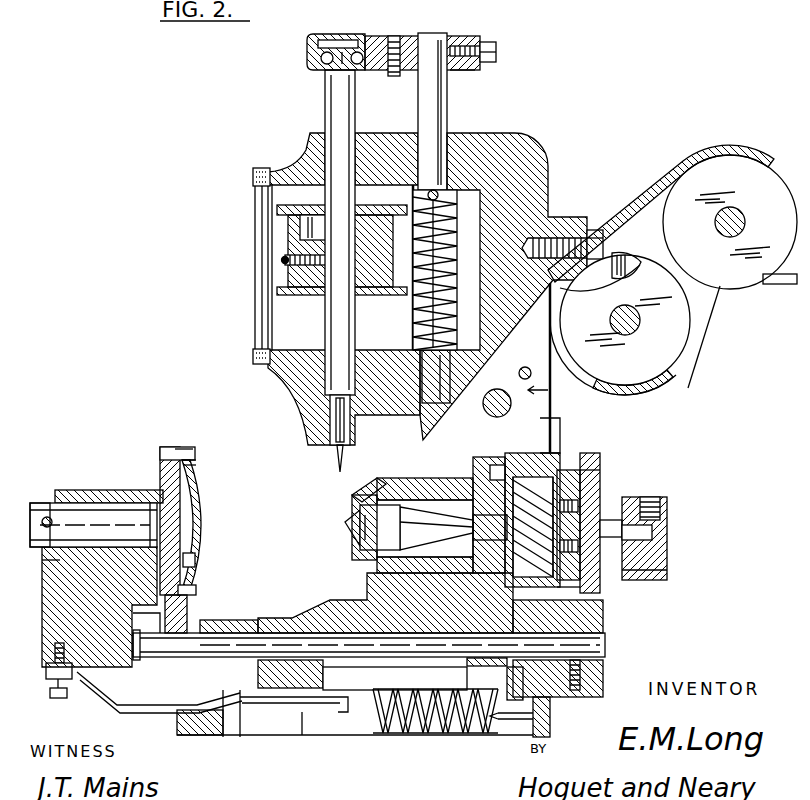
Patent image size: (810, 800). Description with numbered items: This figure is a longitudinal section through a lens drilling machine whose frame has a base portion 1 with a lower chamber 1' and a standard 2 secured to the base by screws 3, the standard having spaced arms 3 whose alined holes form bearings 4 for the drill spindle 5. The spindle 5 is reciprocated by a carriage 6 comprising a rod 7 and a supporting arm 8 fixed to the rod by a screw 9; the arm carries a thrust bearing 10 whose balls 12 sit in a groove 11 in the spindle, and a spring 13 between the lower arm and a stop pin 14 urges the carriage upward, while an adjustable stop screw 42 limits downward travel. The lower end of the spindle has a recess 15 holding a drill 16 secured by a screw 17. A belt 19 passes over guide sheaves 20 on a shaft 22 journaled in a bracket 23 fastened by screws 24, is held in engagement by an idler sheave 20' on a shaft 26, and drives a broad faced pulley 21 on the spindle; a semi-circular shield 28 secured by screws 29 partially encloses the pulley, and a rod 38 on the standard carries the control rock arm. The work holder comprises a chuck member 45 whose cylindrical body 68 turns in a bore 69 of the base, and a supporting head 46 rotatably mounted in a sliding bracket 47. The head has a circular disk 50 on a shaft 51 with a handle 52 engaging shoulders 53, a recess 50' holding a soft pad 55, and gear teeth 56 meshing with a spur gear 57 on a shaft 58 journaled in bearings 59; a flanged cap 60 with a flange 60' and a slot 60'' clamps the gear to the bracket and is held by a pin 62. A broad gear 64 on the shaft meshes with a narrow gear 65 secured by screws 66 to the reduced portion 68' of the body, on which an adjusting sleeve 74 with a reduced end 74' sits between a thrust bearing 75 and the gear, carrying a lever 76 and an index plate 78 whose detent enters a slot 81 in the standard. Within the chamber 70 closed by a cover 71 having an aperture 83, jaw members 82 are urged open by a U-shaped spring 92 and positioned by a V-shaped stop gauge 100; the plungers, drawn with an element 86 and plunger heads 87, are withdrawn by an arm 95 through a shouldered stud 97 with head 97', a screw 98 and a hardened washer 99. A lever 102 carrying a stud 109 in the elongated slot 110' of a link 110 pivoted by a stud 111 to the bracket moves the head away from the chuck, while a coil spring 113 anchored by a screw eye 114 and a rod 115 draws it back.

The base portion 1 is at (226, 739).
The chamber 1' is at (300, 743).
The standard 2 is at (522, 158).
The arms 3 is at (300, 152).
The bearings 4 is at (314, 140).
The drill spindle 5 is at (335, 318).
The carriage 6 is at (450, 85).
The rod 7 is at (440, 113).
The supporting arm 8 is at (420, 33).
The screw 9 is at (497, 50).
The thrust bearing 10 is at (307, 48).
The groove 11 is at (330, 70).
The balls 12 is at (320, 64).
The spring 13 is at (450, 232).
The stop pin 14 is at (445, 195).
The recess 15 is at (328, 426).
The drill 16 is at (336, 463).
The screw 17 is at (338, 452).
The belt 19 is at (775, 285).
The guide sheaves 20 is at (620, 308).
The idler sheave 20' is at (730, 201).
The pulley 21 is at (300, 232).
The shaft 22 is at (630, 322).
The supporting bracket 23 is at (646, 188).
The screws 24 is at (556, 218).
The shaft 26 is at (742, 220).
The shield 28 is at (280, 258).
The screws 29 is at (253, 172).
The rod 38 is at (520, 370).
The screw 42 is at (393, 36).
The chuck member 45 is at (377, 565).
The supporting head member 46 is at (127, 520).
The bracket 47 is at (55, 588).
The circular disk 50 is at (197, 521).
The circular recess 50' is at (211, 454).
The shaft 51 is at (95, 500).
The handle 52 is at (45, 503).
The shoulders 53 is at (42, 563).
The pad 55 is at (196, 520).
The gear teeth 56 is at (192, 456).
The spur gear 57 is at (197, 606).
The shaft 58 is at (200, 626).
The bearings 59 is at (308, 620).
The flanged cap member 60 is at (162, 435).
The flange 60' is at (181, 427).
The slot 60'' is at (209, 582).
The pin 62 is at (196, 560).
The broad-faced gear 64 is at (602, 621).
The narrow-faced gear 65 is at (600, 466).
The screws 66 is at (600, 500).
The cylindrical body portion 68 is at (480, 505).
The reduced portion 68' is at (596, 581).
The bore 69 is at (412, 480).
The cylindrical chamber 70 is at (433, 574).
The cover member 71 is at (378, 486).
The adjusting sleeve 74 is at (532, 511).
The reduced portion 74' is at (609, 475).
The thrust bearing 75 is at (497, 459).
The lever 76 is at (568, 470).
The index plate 78 is at (530, 470).
The slot 81 is at (553, 420).
The jaw members 82 is at (355, 522).
The aperture 83 is at (356, 515).
The cone 86 is at (436, 530).
The head 87 is at (490, 527).
The U-shaped spring member 92 is at (445, 500).
The arm 95 is at (668, 572).
The shouldered stud 97 is at (657, 512).
The head 97' is at (670, 542).
The screw 98 is at (660, 497).
The hardened washer 99 is at (645, 497).
The stop gauge 100 is at (358, 545).
The lever 102 is at (335, 679).
The shouldered stud 109 is at (225, 737).
The link 110 is at (159, 719).
The elongated slot 110' is at (290, 714).
The stud 111 is at (60, 699).
The coil spring 113 is at (432, 722).
The screw eye 114 is at (514, 722).
The rod 115 is at (325, 712).